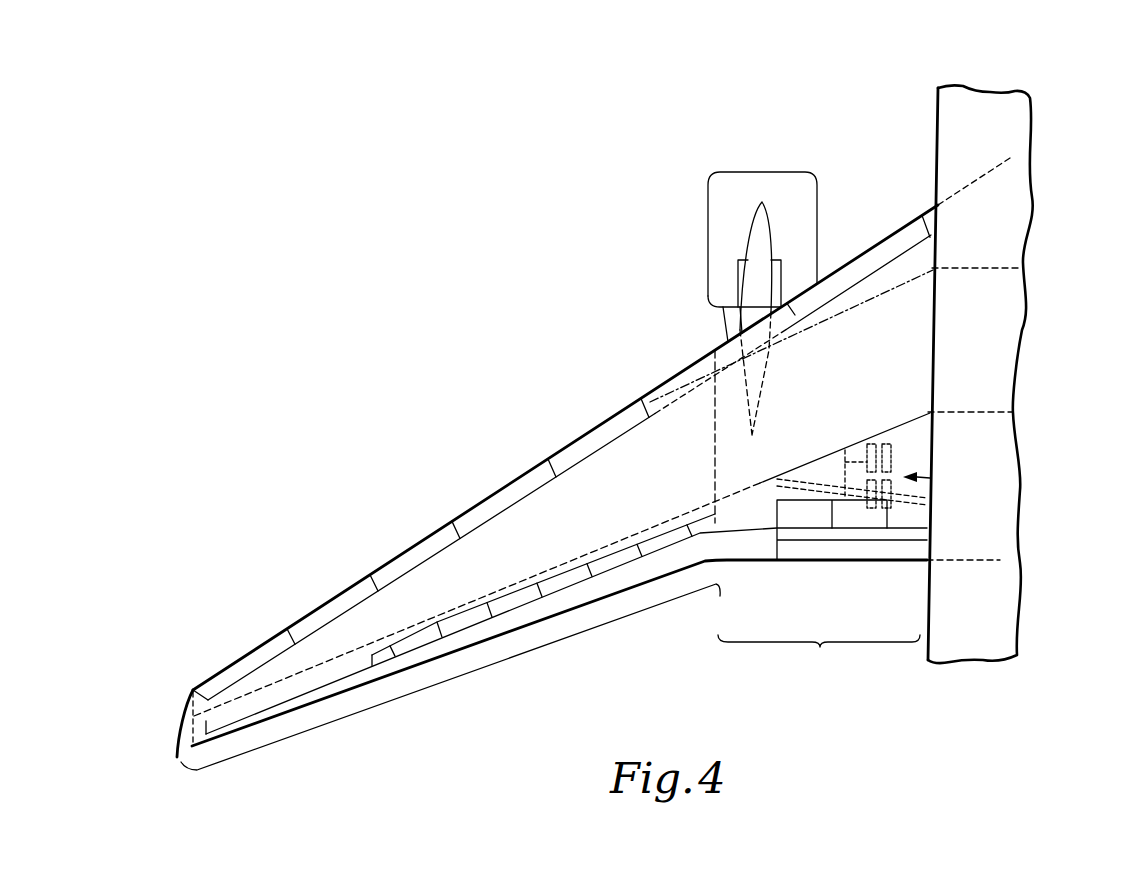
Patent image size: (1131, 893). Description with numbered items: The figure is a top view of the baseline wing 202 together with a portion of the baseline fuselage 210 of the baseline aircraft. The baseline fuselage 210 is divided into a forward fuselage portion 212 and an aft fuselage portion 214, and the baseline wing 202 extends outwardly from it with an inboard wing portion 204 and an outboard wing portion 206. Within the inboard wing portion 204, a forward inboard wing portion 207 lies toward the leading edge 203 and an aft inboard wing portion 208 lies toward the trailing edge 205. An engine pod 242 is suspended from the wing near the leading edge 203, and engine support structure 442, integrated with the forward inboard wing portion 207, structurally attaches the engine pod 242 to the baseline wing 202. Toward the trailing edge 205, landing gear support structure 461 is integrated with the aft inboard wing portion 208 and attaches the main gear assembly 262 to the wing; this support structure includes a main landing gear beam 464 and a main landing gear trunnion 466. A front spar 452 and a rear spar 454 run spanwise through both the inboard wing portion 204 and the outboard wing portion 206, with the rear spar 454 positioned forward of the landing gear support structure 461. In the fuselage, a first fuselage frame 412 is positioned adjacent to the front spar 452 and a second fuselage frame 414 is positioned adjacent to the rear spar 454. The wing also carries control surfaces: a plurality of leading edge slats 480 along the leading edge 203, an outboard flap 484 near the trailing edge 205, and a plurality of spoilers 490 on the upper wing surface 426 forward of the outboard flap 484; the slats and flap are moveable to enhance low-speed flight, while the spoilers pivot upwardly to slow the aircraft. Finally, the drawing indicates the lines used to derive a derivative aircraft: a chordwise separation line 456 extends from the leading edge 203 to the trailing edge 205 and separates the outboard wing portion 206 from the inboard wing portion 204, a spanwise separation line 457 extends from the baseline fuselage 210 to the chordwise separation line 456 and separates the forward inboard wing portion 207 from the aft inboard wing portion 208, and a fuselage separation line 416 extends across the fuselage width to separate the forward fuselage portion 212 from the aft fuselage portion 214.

The baseline wing 202 is at (193, 690).
The leading edge 203 is at (598, 427).
The inboard wing portion 204 is at (820, 647).
The trailing edge 205 is at (750, 563).
The outboard wing portion 206 is at (445, 683).
The forward inboard wing portion 207 is at (866, 284).
The aft inboard wing portion 208 is at (765, 515).
The baseline fuselage 210 is at (938, 153).
The forward fuselage portion 212 is at (938, 100).
The aft fuselage portion 214 is at (920, 663).
The engine pod 242 is at (705, 210).
The main gear assembly 262 is at (877, 520).
The first fuselage frame 412 is at (997, 268).
The second fuselage frame 414 is at (976, 412).
The fuselage separation line 416 is at (1013, 412).
The upper wing surface 426 is at (580, 488).
The engine support structure 442 is at (766, 366).
The front spar 452 is at (883, 292).
The rear spar 454 is at (883, 430).
The chordwise separation line 456 is at (657, 406).
The spanwise separation line 457 is at (817, 457).
The landing gear support structure 461 is at (930, 478).
The main landing gear beam 464 is at (913, 503).
The main landing gear trunnion 466 is at (883, 472).
The leading edge slats 480 is at (690, 373).
The outboard flap 484 is at (573, 603).
The spoilers 490 is at (660, 540).